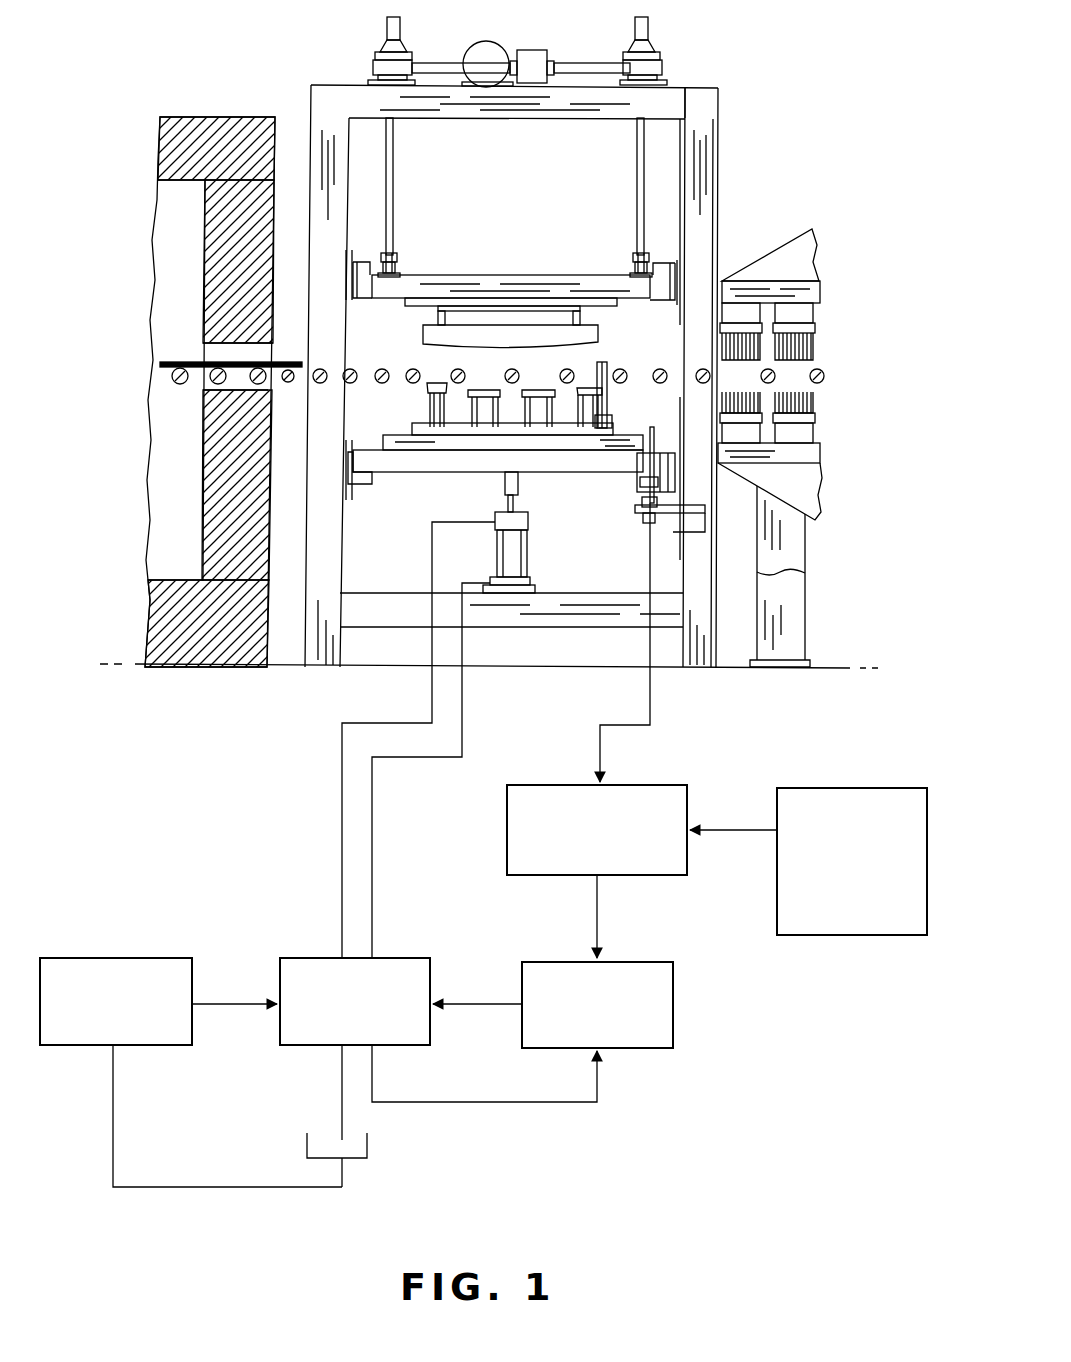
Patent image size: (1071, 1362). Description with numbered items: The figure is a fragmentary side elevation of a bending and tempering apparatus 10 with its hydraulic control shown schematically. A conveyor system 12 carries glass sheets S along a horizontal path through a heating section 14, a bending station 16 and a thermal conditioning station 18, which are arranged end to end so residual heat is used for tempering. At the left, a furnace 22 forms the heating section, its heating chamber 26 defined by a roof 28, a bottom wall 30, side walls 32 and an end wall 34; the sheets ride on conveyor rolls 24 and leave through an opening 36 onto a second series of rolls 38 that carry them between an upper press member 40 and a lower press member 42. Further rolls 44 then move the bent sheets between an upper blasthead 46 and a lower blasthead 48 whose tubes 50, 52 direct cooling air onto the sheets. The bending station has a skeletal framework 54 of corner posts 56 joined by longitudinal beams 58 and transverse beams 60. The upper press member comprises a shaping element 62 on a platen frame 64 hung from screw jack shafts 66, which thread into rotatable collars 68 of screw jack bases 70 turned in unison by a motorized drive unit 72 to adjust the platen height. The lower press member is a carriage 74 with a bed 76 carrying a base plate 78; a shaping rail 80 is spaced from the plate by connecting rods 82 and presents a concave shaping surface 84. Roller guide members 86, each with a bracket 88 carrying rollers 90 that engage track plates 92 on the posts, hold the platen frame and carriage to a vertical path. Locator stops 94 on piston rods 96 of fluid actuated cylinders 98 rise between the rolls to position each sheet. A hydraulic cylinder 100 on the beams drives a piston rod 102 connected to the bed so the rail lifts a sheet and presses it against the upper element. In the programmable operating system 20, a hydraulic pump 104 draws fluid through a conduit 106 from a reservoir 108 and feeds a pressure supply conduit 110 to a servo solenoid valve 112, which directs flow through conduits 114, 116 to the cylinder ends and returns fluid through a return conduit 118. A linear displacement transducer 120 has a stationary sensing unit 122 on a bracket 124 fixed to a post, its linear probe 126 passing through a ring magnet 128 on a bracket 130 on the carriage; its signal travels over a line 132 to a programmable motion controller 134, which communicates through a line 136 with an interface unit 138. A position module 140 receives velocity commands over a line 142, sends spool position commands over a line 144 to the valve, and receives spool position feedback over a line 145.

The bending and tempering apparatus 10 is at (760, 34).
The conveyor system 12 is at (298, 388).
The heating section 14 is at (208, 112).
The bending station 16 is at (541, 43).
The thermal conditioning station 18 is at (797, 415).
The programmable operating system 20 is at (483, 999).
The furnace 22 is at (185, 112).
The conveyor rolls 24 is at (210, 381).
The heating chamber 26 is at (170, 490).
The roof 28 is at (163, 140).
The bottom wall 30 is at (155, 625).
The side walls 32 is at (176, 380).
The end wall 34 is at (275, 160).
The opening 36 is at (203, 348).
The conveyor rolls 38 is at (340, 372).
The glass sheet S is at (165, 360).
The upper press member 40 is at (418, 336).
The lower press member 42 is at (414, 407).
The rolls 44 is at (826, 377).
The upper blasthead 46 is at (808, 258).
The lower blasthead 48 is at (822, 488).
The tubes 50 is at (815, 345).
The tubes 52 is at (815, 405).
The skeletal framework 54 is at (534, 355).
The corner posts 56 is at (313, 165).
The longitudinal beams 58 is at (520, 112).
The transverse beams 60 is at (713, 106).
The shaping element 62 is at (512, 340).
The platen frame 64 is at (465, 274).
The screw jack shafts 66 is at (396, 137).
The rotatable collars 68 is at (658, 70).
The screw jack bases 70 is at (648, 42).
The motorized drive unit 72 is at (524, 48).
The carriage 74 is at (403, 482).
The bed 76 is at (423, 462).
The base plate 78 is at (412, 428).
The shaping rail 80 is at (517, 389).
The connecting rods 82 is at (455, 433).
The shaping surface 84 is at (468, 450).
The roller guide members 86 is at (370, 258).
The brackets 88 is at (650, 292).
The rollers 90 is at (350, 292).
The track plates 92 is at (352, 182).
The locator stops 94 is at (603, 362).
The piston rod 96 is at (612, 420).
The fluid actuated cylinder 98 is at (620, 440).
The hydraulic cylinder 100 is at (486, 532).
The piston rod 102 is at (505, 497).
The hydraulic pump 104 is at (88, 957).
The conduit 106 is at (190, 1188).
The reservoir 108 is at (367, 1152).
The pressure supply conduit 110 is at (228, 1003).
The servo solenoid valve 112 is at (410, 957).
The conduit 114 is at (462, 695).
The conduit 116 is at (432, 690).
The return conduit 118 is at (340, 1086).
The linear displacement transducer 120 is at (688, 487).
The stationary sensing unit 122 is at (645, 502).
The bracket 124 is at (650, 522).
The linear probe 126 is at (652, 427).
The ring magnet 128 is at (640, 482).
The bracket 130 is at (637, 470).
The line 132 is at (650, 690).
The programmable motion controller 134 is at (507, 830).
The line 136 is at (726, 829).
The interface unit 138 is at (835, 787).
The position module 140 is at (673, 1028).
The line 142 is at (598, 910).
The line 144 is at (470, 1012).
The line 145 is at (482, 1103).